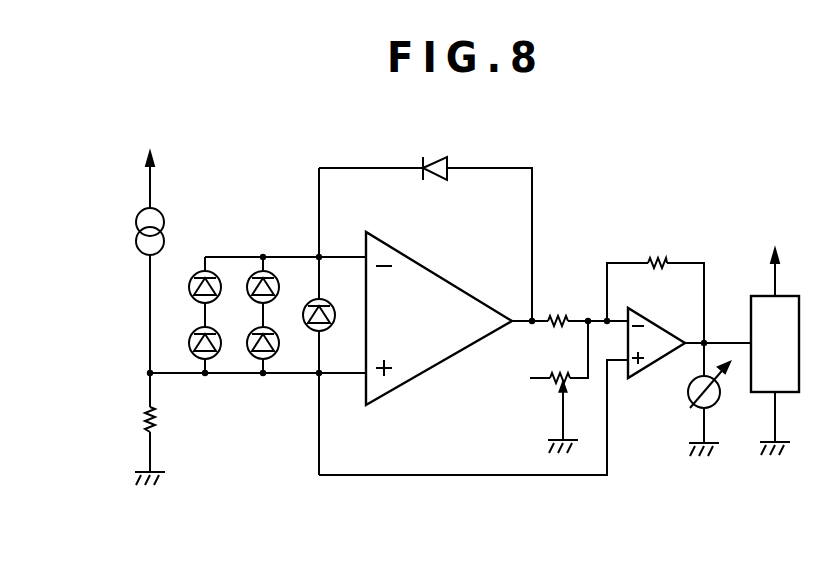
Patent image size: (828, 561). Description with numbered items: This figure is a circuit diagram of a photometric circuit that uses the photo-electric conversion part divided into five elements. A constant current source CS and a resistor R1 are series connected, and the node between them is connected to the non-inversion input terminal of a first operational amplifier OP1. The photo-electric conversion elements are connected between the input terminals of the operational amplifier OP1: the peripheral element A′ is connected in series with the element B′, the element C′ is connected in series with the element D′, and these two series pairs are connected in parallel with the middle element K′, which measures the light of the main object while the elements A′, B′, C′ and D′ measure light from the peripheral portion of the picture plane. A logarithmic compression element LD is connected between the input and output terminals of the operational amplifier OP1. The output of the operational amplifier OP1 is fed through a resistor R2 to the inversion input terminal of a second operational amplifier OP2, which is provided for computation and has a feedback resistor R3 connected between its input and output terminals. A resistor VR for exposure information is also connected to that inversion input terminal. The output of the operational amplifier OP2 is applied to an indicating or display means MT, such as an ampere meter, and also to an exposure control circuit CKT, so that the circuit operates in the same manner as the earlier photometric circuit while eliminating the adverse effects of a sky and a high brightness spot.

The constant current source CS is at (165, 227).
The photo-electric conversion element C′ is at (189, 287).
The photo-electric conversion element D′ is at (189, 343).
The photo-electric conversion element A′ is at (279, 287).
The photo-electric conversion element B′ is at (279, 343).
The photo-electric conversion element K′ is at (332, 308).
The resistor R1 is at (158, 418).
The logarithmic compression element LD is at (440, 154).
The operational amplifier OP1 is at (445, 277).
The resistor R2 is at (557, 315).
The resistor for exposure information VR is at (562, 374).
The feedback resistor R3 is at (653, 258).
The operational amplifier OP2 is at (660, 324).
The indicating or display means MT is at (688, 392).
The exposure control circuit CKT is at (758, 296).